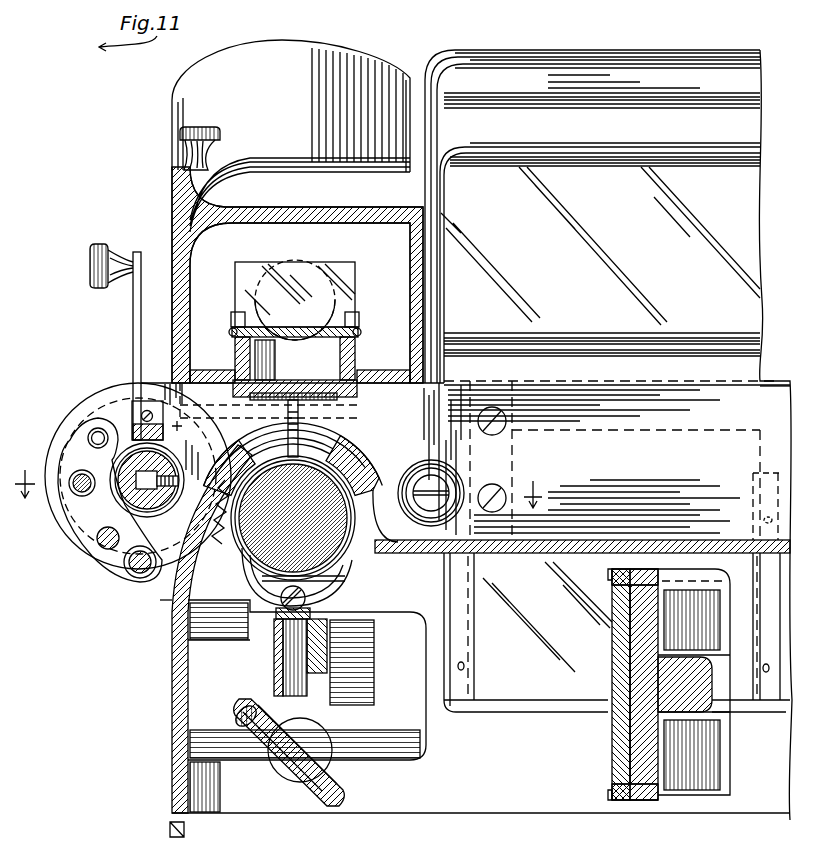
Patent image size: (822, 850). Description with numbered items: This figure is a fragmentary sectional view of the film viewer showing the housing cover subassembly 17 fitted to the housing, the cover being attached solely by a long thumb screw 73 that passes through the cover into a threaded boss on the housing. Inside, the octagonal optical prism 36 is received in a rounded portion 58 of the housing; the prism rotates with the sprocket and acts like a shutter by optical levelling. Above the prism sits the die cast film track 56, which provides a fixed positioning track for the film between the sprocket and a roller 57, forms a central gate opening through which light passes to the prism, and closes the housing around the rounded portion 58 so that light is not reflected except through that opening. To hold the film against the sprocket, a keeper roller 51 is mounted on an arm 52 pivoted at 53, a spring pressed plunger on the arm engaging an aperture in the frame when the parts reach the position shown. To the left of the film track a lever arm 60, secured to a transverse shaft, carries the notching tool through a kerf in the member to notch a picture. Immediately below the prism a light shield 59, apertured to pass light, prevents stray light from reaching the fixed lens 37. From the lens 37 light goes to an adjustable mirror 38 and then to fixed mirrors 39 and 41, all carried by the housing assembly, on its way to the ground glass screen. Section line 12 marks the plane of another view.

The section line 12- 12 is at (285, 479).
The housing cover subassembly 17 is at (160, 204).
The octagonal optical prism 36 is at (247, 538).
The fixed lens 37 is at (334, 604).
The adjustable mirror 38 is at (311, 804).
The fixed mirror 39 is at (612, 762).
The fixed mirror 41 is at (521, 708).
The keeper roller 51 is at (72, 424).
The arm 52 is at (74, 523).
The pivot 53 is at (140, 582).
The die cast film track 56 is at (348, 450).
The roller 57 is at (423, 468).
The rounded portion 58 is at (171, 737).
The light shield 59 is at (344, 579).
The lever arm 60 is at (133, 322).
The thumb screw 73 is at (193, 153).